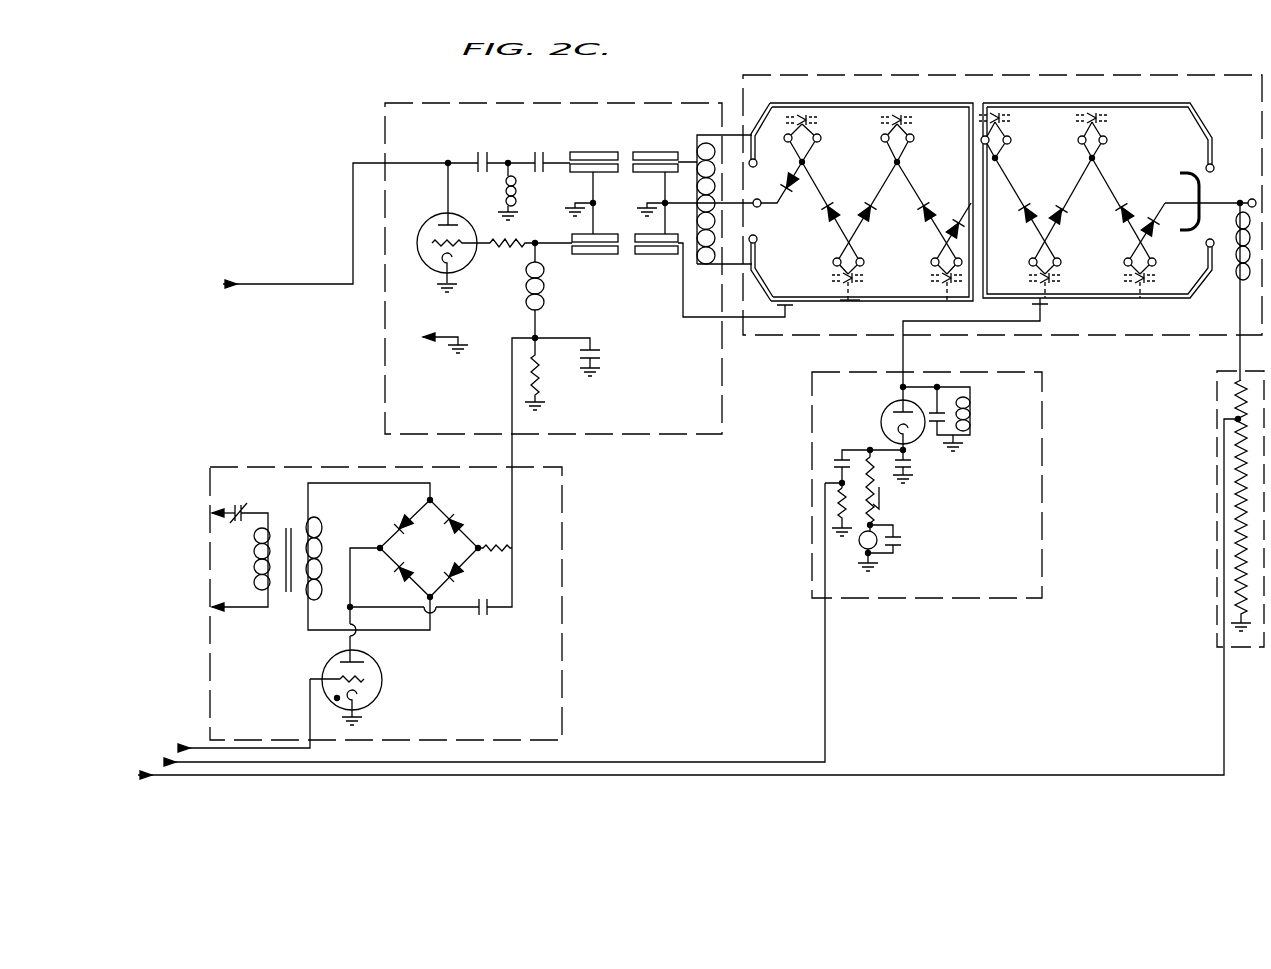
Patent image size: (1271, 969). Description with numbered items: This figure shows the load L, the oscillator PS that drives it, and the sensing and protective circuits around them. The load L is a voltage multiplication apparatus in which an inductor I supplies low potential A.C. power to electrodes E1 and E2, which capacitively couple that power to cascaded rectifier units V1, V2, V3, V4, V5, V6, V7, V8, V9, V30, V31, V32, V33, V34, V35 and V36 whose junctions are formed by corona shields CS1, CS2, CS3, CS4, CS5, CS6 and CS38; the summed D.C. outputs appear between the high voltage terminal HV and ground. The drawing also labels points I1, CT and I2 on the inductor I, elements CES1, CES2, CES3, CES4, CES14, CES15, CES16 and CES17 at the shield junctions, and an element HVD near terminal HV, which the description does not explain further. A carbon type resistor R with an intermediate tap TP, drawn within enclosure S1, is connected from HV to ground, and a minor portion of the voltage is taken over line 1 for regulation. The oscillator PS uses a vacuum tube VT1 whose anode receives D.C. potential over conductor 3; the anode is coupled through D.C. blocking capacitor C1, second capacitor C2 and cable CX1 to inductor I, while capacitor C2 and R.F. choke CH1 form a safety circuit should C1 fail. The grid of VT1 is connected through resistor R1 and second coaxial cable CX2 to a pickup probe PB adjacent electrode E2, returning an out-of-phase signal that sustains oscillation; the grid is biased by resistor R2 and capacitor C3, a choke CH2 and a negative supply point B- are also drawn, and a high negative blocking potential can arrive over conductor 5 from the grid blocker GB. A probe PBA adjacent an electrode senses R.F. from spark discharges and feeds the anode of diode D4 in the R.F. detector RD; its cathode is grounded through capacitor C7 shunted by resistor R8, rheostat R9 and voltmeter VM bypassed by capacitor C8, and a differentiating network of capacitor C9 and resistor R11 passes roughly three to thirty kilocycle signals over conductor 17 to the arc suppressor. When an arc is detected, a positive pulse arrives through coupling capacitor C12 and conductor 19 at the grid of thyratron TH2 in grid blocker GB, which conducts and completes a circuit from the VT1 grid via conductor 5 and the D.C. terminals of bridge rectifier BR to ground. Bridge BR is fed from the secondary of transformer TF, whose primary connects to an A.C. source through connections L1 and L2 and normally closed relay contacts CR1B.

The oscillator PS is at (568, 103).
The load L is at (1055, 75).
The grid blocker GB is at (563, 521).
The rectifier-detector unit RD is at (1042, 430).
The shunt resistor unit S1 is at (1216, 569).
The conductor 3 is at (353, 226).
The D.C. blocking capacitor C1 is at (478, 158).
The second capacitor C2 is at (538, 155).
The R.F. choke CH1 is at (520, 192).
The cable CX1 is at (595, 152).
The second coaxial cable CX2 is at (596, 254).
The inductor I is at (697, 140).
The coil terminal I1 is at (746, 134).
The center tap CT is at (728, 208).
The coil terminal I2 is at (732, 266).
The vacuum tube VT1 is at (438, 218).
The resistor R1 is at (508, 250).
The choke coil CH2 is at (546, 290).
The capacitor C3 is at (597, 350).
The resistor R2 is at (541, 383).
The negative supply terminal B- is at (440, 332).
The conductor 5 is at (512, 413).
The electrode E1 is at (885, 103).
The electrode E2 is at (848, 303).
The pickup probe PB is at (788, 312).
The probe PBA is at (1046, 312).
The corona shield CS1 is at (780, 143).
The corona shield CS2 is at (822, 138).
The corona shield CS3 is at (832, 262).
The corona shield CS4 is at (864, 260).
The corona shield CS5 is at (882, 142).
The corona shield CS6 is at (913, 141).
The corona shield CS38 is at (1157, 264).
The contact element CES1 is at (825, 118).
The contact element CES2 is at (832, 283).
The contact element CES3 is at (919, 116).
The contact element CES4 is at (932, 287).
The contact element CES14 is at (1052, 283).
The contact element CES15 is at (1020, 134).
The contact element CES16 is at (1162, 285).
The contact element CES17 is at (1118, 134).
The rectifier unit V1 is at (781, 180).
The rectifier unit V2 is at (821, 212).
The rectifier unit V3 is at (821, 212).
The rectifier unit V4 is at (857, 212).
The rectifier unit V5 is at (860, 203).
The rectifier unit V6 is at (917, 212).
The rectifier unit V7 is at (917, 212).
The rectifier unit V8 is at (943, 217).
The rectifier unit V9 is at (956, 203).
The rectifier unit V30 is at (1039, 210).
The rectifier unit V31 is at (1040, 192).
The rectifier unit V32 is at (1081, 210).
The rectifier unit V33 is at (1063, 222).
The rectifier unit V34 is at (1136, 210).
The rectifier unit V35 is at (1135, 192).
The rectifier unit V36 is at (1156, 226).
The high voltage D.C. terminal HV is at (1250, 200).
The high voltage divider HVD is at (1207, 201).
The diode D4 is at (881, 414).
The capacitor C7 is at (910, 470).
The capacitor C8 is at (900, 548).
The capacitor C9 is at (838, 458).
The resistor R8 is at (876, 478).
The rheostat R9 is at (880, 511).
The resistor R11 is at (836, 505).
The voltmeter VM is at (872, 549).
The conductor 17 is at (828, 610).
The line 1 is at (608, 773).
The carbon type resistor R is at (1236, 511).
The intermediate tap TP is at (1232, 418).
The input lead L1 is at (209, 514).
The input lead L2 is at (204, 607).
The relay contacts CR1B is at (238, 504).
The transformer TF is at (315, 527).
The bridge rectifier BR is at (443, 560).
The coupling capacitor C12 is at (488, 616).
The thyratron TH2 is at (383, 669).
The conductor 19 is at (310, 720).